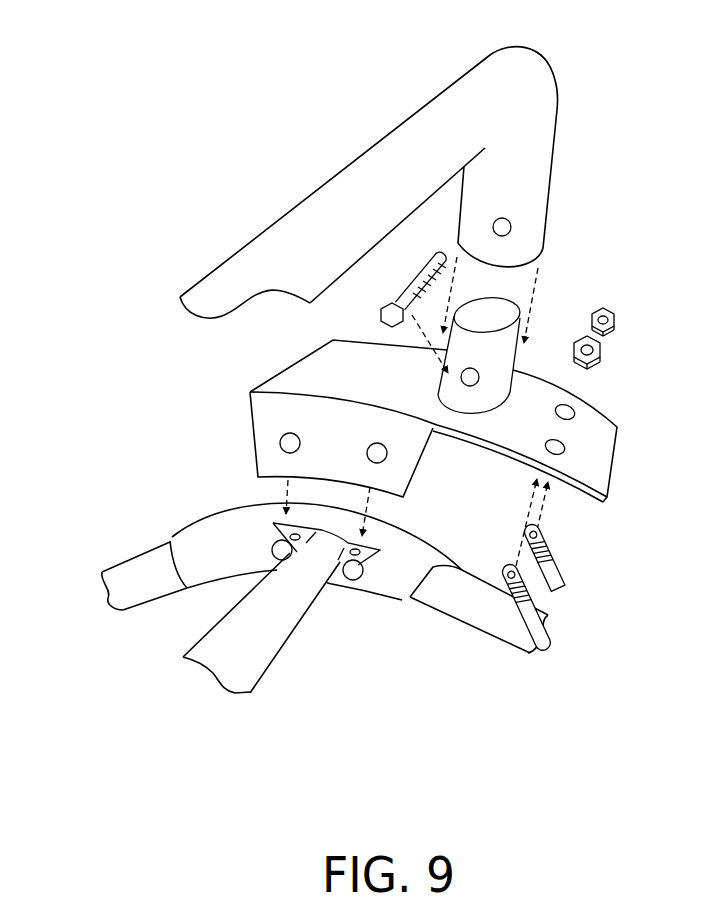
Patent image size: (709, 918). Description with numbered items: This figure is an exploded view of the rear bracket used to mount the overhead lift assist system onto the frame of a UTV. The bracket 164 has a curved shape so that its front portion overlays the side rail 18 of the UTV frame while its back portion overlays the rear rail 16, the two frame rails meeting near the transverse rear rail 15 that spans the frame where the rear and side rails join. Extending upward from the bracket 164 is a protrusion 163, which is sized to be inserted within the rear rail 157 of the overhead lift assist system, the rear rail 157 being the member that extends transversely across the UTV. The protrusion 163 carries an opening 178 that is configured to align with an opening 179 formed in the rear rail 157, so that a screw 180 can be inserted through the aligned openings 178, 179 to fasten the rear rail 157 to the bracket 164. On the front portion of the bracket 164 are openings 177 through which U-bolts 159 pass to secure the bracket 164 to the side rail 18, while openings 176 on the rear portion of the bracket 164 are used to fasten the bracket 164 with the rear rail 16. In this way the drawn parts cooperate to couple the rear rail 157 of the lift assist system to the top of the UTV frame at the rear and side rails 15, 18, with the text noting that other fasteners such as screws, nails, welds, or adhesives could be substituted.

The rear rail 15 is at (257, 643).
The rear rail 16 is at (147, 570).
The side rail 18 is at (530, 613).
The rear rail 157 is at (303, 222).
The U-bolt 159 is at (480, 647).
The protrusion 163 is at (500, 360).
The bracket 164 is at (603, 447).
The opening 176 is at (280, 443).
The opening 177 is at (573, 409).
The opening 178 is at (463, 381).
The opening 179 is at (509, 220).
The screw 180 is at (402, 296).